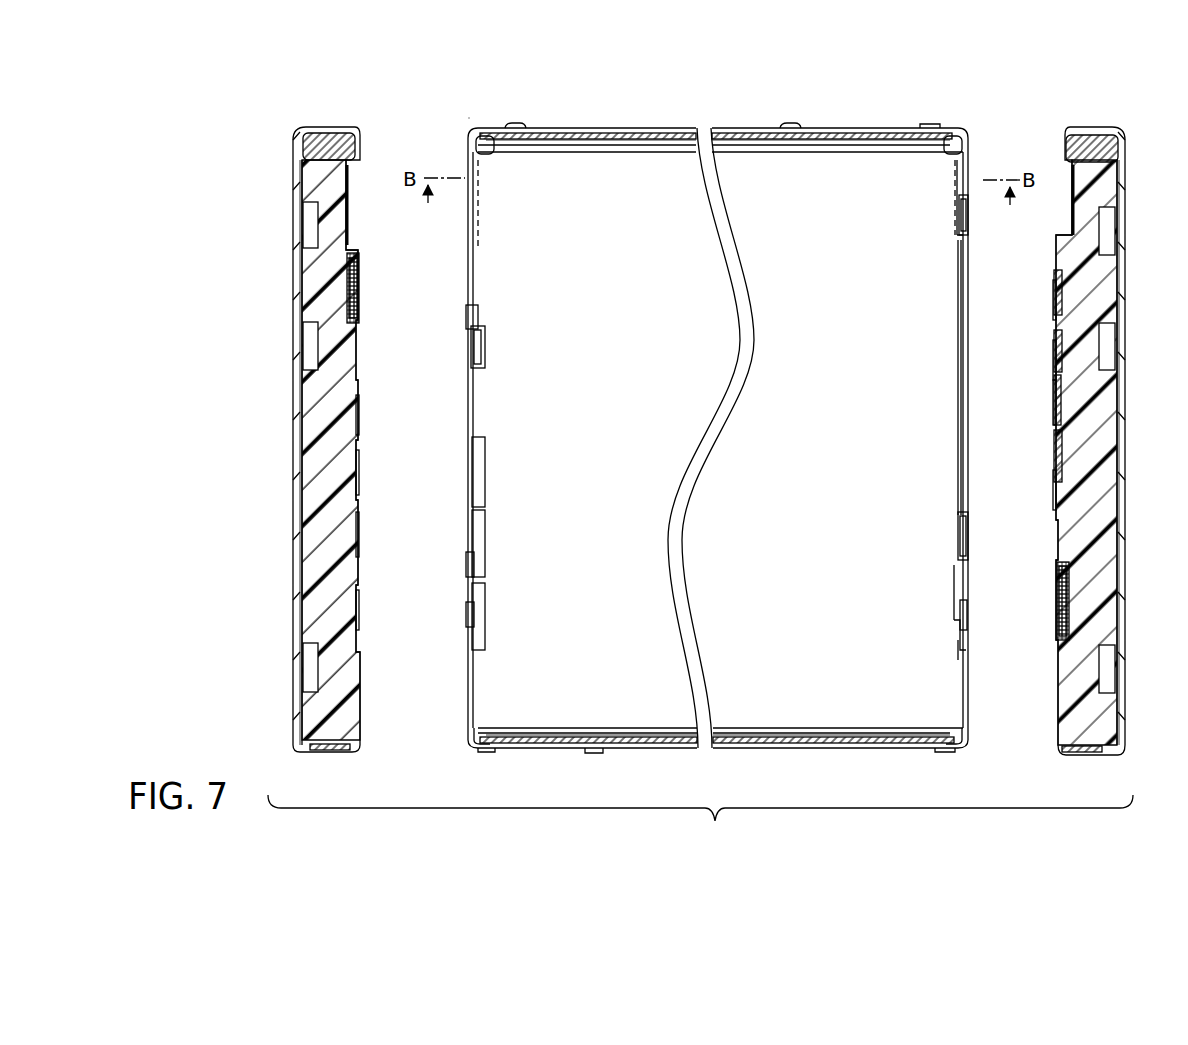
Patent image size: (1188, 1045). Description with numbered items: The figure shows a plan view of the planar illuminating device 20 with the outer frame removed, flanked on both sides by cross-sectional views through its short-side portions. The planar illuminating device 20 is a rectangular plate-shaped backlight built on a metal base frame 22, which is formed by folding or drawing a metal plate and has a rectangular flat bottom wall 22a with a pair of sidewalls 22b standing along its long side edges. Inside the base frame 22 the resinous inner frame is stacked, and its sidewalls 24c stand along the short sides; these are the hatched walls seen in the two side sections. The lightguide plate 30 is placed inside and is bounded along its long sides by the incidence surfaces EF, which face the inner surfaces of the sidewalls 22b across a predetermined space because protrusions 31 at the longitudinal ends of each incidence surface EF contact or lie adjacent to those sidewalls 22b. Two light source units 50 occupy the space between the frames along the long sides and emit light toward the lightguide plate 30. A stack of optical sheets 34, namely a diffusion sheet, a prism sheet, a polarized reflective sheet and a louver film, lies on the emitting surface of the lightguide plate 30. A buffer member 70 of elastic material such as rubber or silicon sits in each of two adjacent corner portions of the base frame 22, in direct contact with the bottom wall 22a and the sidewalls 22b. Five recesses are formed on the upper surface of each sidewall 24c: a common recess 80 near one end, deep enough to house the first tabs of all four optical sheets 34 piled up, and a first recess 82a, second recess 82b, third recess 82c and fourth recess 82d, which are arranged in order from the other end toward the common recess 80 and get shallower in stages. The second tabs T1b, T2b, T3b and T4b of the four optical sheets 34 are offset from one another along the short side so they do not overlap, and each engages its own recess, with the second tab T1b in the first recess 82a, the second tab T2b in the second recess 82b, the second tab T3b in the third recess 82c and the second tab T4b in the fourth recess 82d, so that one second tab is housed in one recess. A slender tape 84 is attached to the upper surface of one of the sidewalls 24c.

The planar illuminating device 20 is at (570, 112).
The base frame 22 is at (292, 405).
The bottom wall 22a is at (305, 316).
The sidewalls 22b is at (333, 138).
The sidewalls 24c is at (474, 440).
The lightguide plate 30 is at (822, 152).
The protrusions 31 is at (490, 738).
The optical sheets 34 is at (880, 185).
The light source units 50 is at (633, 134).
The buffer member 70 is at (482, 140).
The common recess 80 is at (477, 312).
The first recess 82a is at (474, 629).
The second recess 82b is at (474, 562).
The third recess 82c is at (474, 492).
The fourth recess 82d is at (476, 381).
The slender tape 84 is at (962, 268).
The incidence surfaces EF is at (736, 140).
The second tab T1b is at (474, 596).
The second tab T2b is at (474, 533).
The second tab T3b is at (474, 466).
The second tab T4b is at (476, 413).